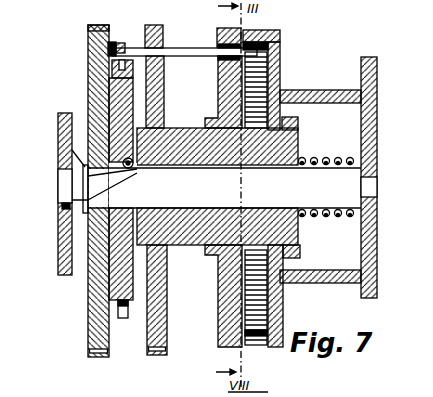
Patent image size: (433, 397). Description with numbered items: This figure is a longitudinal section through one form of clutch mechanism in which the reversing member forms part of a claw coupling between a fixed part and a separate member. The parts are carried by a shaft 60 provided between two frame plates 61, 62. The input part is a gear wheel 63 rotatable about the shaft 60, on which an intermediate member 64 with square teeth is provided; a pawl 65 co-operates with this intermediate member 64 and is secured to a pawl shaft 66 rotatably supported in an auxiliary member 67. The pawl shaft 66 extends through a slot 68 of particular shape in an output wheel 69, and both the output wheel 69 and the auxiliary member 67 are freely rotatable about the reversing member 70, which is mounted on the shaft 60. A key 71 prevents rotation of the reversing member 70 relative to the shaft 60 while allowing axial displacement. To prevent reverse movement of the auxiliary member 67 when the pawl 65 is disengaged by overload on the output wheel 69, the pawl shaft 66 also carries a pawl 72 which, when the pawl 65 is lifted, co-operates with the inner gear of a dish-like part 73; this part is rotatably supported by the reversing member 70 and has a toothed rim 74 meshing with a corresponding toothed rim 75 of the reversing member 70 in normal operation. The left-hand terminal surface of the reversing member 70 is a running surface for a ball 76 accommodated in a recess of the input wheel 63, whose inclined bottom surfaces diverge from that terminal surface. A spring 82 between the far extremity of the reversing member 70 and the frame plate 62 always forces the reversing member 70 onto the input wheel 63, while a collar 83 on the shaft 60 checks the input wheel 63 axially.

The shaft 60 is at (80, 202).
The frame plate 61 is at (67, 152).
The frame plate 62 is at (378, 98).
The gear wheel 63 is at (102, 97).
The intermediate member 64 is at (88, 77).
The pawl 65 is at (110, 24).
The pawl shaft 66 is at (172, 52).
The auxiliary member 67 is at (220, 30).
The slot 68 is at (111, 42).
The output wheel 69 is at (153, 25).
The reversing member 70 is at (90, 272).
The key 71 is at (143, 173).
The pawl 72 is at (272, 30).
The dish-like part 73 is at (274, 55).
The toothed rim 74 is at (279, 117).
The toothed rim 75 is at (299, 129).
The ball 76 is at (85, 177).
The spring 82 is at (338, 215).
The collar 83 is at (58, 128).